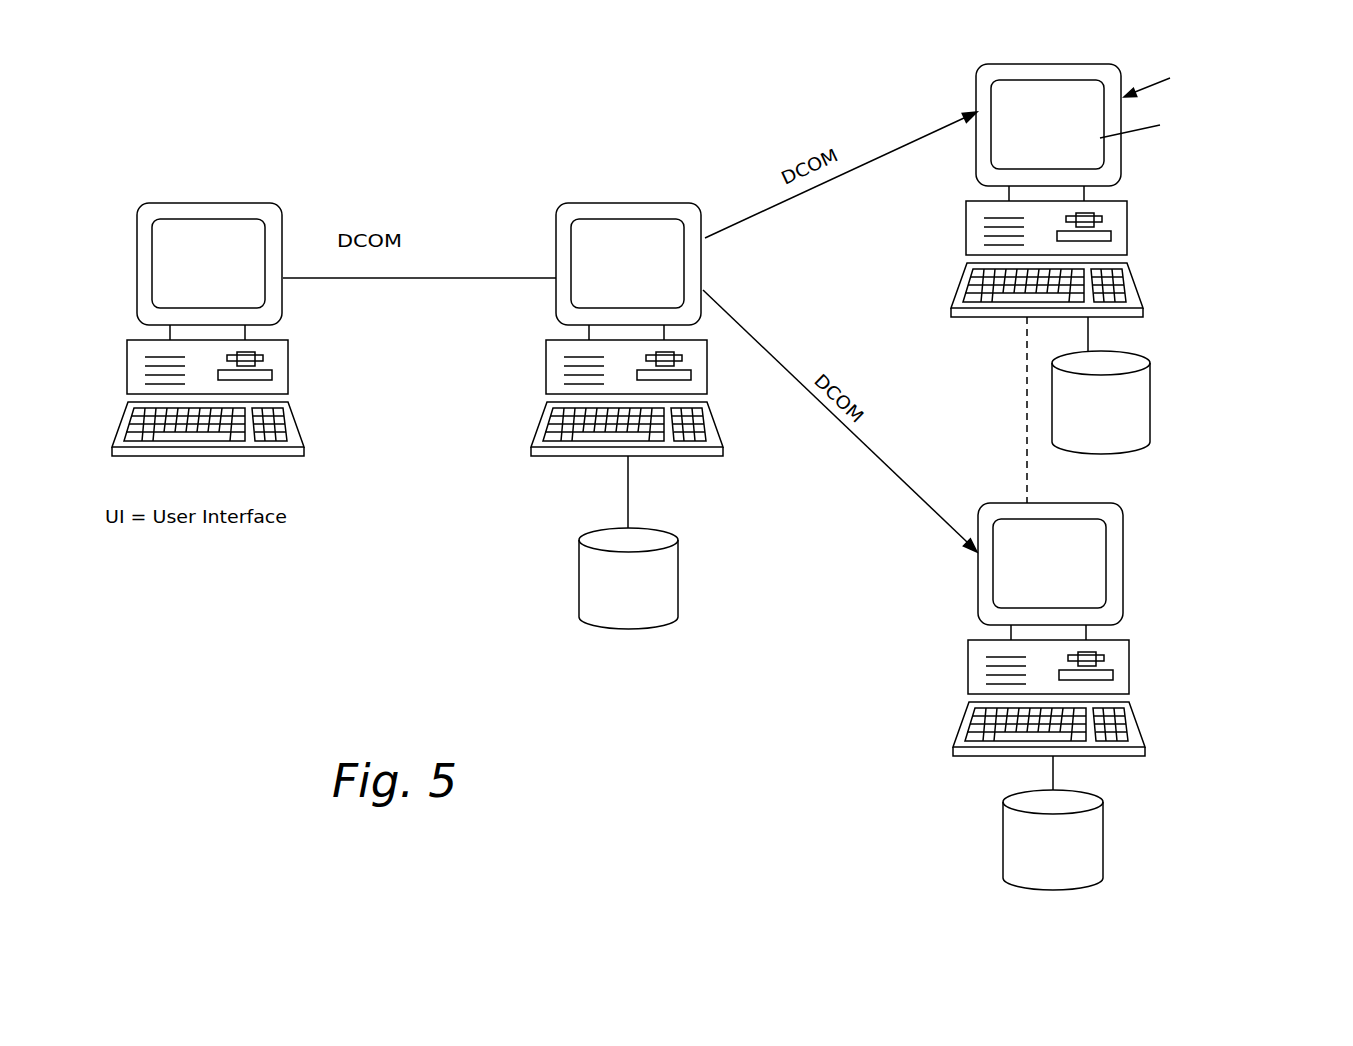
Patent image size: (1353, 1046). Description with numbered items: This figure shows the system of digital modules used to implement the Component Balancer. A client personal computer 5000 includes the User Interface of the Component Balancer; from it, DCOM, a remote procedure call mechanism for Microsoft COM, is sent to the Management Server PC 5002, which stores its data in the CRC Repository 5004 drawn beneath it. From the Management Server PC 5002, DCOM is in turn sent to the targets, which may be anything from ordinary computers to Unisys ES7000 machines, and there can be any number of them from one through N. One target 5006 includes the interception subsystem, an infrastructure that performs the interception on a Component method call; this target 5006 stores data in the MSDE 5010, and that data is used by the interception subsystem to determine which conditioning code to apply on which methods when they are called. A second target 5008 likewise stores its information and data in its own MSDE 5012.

The client personal computer 5000 is at (283, 228).
The Management Server PC 5002 is at (555, 240).
The CRC Repository 5004 is at (678, 575).
The target 5006 is at (976, 103).
The target 5008 is at (1126, 563).
The MSDE 5010 is at (1150, 425).
The MSDE 5012 is at (1003, 840).